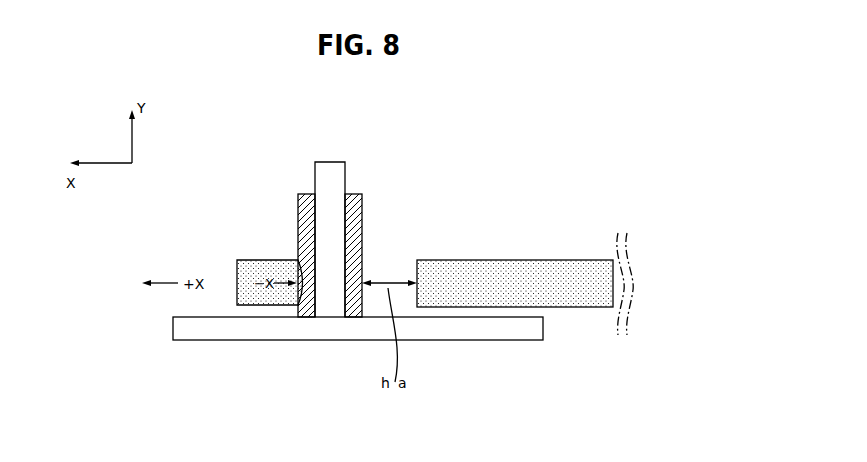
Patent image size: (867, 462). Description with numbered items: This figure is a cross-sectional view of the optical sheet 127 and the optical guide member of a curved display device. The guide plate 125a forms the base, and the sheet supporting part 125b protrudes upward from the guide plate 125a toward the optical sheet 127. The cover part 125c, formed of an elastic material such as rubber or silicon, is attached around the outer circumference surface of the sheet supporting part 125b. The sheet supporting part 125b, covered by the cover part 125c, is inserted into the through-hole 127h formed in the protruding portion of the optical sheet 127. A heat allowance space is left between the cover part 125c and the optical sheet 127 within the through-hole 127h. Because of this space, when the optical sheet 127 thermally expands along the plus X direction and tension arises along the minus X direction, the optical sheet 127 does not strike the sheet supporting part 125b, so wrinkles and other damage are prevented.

The guide plate 125a is at (487, 330).
The sheet supporting part 125b is at (333, 182).
The cover part 125c is at (361, 240).
The optical sheet 127 is at (530, 270).
The through-hole 127h is at (390, 265).